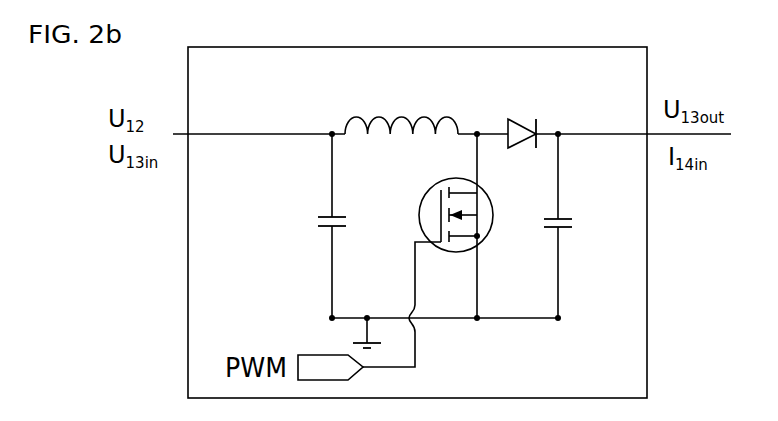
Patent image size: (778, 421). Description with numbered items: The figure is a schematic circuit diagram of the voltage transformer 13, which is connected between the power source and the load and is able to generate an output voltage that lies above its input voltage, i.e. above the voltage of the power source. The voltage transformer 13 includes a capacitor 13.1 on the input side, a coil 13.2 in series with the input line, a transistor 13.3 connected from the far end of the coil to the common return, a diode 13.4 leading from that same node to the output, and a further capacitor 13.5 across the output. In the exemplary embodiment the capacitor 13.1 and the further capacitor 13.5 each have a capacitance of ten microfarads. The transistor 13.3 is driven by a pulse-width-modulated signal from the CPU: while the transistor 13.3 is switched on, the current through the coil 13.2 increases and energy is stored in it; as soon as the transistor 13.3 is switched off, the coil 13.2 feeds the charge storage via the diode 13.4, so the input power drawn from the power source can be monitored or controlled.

The voltage transformer 13 is at (251, 85).
The capacitor 13.1 is at (318, 223).
The coil 13.2 is at (403, 128).
The transistor 13.3 is at (420, 210).
The diode 13.4 is at (512, 125).
The further capacitor 13.5 is at (573, 221).